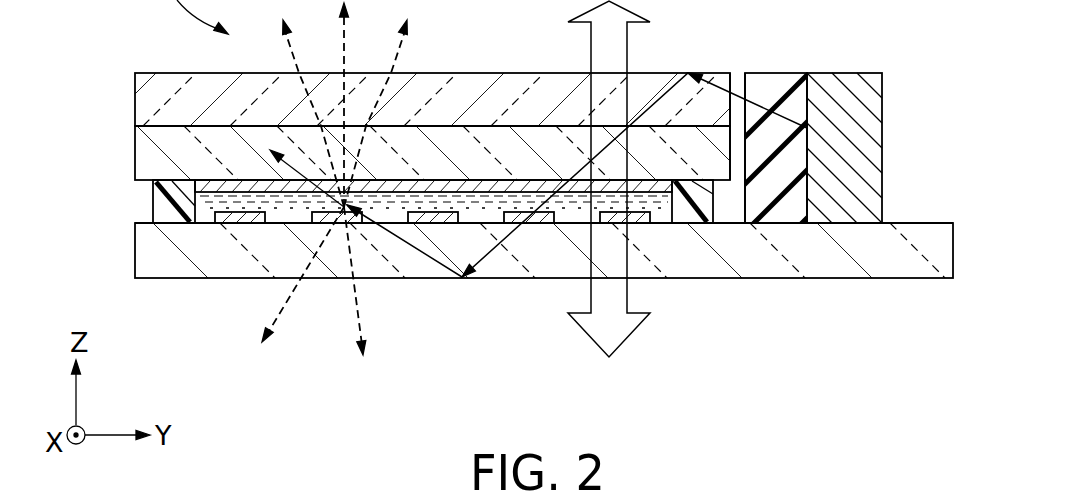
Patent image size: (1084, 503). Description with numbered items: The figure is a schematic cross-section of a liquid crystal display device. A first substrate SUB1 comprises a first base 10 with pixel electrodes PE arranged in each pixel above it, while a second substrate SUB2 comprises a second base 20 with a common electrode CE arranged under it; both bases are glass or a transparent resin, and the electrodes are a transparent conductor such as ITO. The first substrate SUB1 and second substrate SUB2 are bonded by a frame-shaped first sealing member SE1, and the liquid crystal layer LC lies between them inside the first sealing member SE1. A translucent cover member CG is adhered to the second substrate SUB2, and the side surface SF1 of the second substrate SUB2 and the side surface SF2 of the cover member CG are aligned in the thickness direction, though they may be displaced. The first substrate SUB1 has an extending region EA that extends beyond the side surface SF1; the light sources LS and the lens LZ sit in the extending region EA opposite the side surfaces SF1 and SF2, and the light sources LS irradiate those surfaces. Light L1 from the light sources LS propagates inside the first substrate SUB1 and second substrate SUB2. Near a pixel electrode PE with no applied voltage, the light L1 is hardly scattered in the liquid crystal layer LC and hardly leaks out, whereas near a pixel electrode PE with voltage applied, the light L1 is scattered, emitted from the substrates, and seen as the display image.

The first base 10 is at (422, 267).
The second base 20 is at (182, 133).
The first substrate SUB1 is at (128, 238).
The second substrate SUB2 is at (126, 141).
The cover member CG is at (474, 90).
The common electrode CE is at (468, 187).
The pixel electrode PE is at (337, 216).
The liquid crystal layer LC is at (212, 215).
The first sealing member SE1 is at (688, 213).
The lens LZ is at (786, 85).
The light source LS is at (839, 85).
The side surface of the second substrate SF1 is at (742, 172).
The side surface of the cover member SF2 is at (739, 78).
The extending region EA is at (918, 216).
The light L1 is at (661, 95).